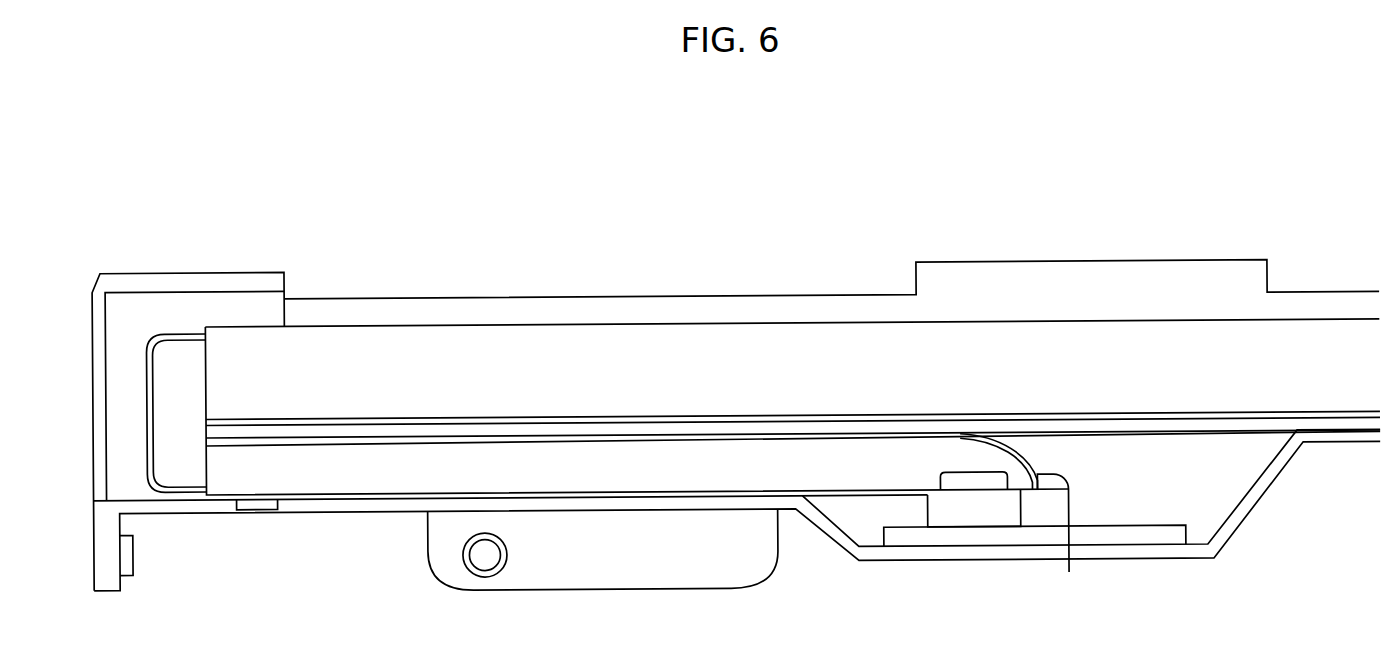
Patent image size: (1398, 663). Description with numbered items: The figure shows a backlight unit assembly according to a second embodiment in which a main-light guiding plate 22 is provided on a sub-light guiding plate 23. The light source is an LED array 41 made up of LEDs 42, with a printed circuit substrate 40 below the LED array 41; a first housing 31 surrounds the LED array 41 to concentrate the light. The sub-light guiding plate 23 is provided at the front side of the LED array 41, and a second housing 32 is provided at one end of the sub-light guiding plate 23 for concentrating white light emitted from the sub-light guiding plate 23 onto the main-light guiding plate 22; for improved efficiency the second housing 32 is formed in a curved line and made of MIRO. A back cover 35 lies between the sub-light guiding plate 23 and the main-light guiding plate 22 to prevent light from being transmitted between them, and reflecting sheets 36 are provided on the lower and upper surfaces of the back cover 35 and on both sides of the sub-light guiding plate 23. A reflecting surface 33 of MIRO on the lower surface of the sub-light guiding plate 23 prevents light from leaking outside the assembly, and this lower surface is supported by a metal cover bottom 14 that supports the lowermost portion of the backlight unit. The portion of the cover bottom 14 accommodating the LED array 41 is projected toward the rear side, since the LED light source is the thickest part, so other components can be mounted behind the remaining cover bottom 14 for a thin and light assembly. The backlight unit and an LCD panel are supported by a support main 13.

The support main 13 is at (134, 310).
The cover bottom 14 is at (102, 553).
The main-light guiding plate 22 is at (624, 352).
The sub-light guiding plate 23 is at (623, 491).
The first housing 31 is at (1023, 520).
The second housing 32 is at (148, 407).
The reflecting surface 33 is at (357, 498).
The back cover 35 is at (472, 430).
The reflecting sheets 36 is at (362, 442).
The printed circuit substrate 40 is at (1130, 541).
The LED array 41 is at (973, 522).
The LEDs 42 is at (972, 484).